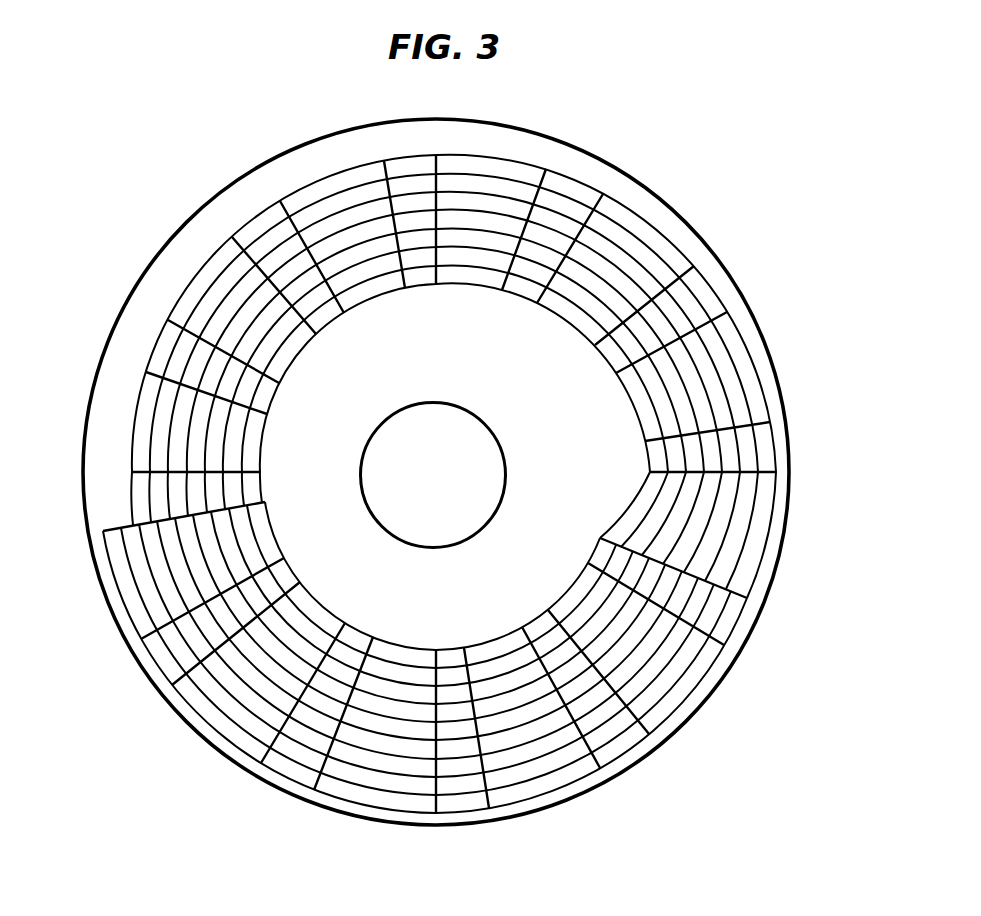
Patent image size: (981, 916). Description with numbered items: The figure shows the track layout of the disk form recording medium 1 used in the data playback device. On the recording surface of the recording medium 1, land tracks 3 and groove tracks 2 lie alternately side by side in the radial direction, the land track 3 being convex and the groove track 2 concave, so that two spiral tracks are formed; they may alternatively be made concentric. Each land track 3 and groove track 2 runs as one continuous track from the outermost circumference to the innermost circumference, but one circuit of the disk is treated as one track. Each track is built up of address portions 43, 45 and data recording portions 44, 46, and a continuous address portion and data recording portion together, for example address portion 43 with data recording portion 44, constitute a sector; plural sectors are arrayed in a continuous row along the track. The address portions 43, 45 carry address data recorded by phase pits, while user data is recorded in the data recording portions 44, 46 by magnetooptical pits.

The disk form recording medium 1 is at (702, 218).
The groove track 2 is at (607, 536).
The land track 3 is at (622, 543).
The address portion 43 is at (728, 628).
The data recording portion 44 is at (685, 691).
The address portion 45 is at (718, 605).
The data recording portion 46 is at (655, 695).